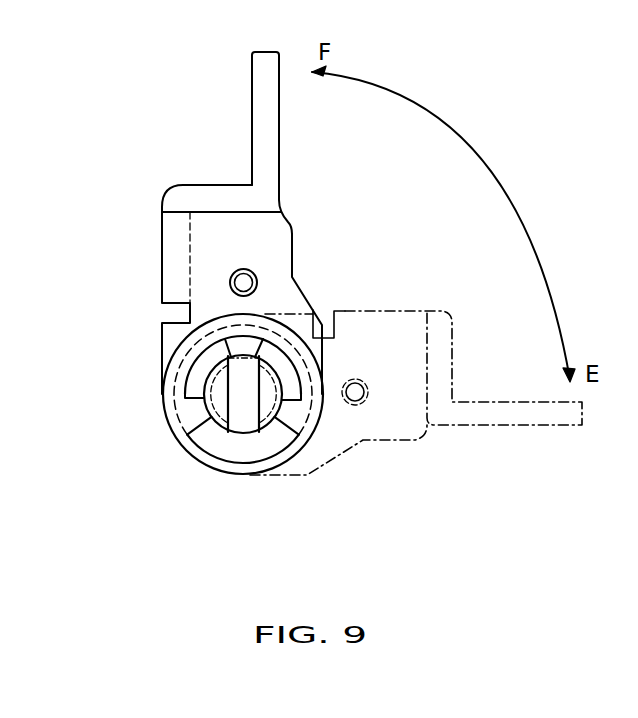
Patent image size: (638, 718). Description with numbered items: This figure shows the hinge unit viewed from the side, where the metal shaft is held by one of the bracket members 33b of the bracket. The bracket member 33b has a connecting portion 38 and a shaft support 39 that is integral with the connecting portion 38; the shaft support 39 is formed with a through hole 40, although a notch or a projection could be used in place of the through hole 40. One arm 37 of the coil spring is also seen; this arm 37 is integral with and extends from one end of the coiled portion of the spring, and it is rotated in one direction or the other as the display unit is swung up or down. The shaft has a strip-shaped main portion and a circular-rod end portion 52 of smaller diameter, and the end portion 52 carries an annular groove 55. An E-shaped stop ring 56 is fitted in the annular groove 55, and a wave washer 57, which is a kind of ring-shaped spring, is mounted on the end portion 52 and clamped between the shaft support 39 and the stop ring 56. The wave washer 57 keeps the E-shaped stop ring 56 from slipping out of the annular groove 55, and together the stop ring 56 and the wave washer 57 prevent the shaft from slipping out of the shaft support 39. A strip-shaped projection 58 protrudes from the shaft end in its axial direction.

The bracket member 33b is at (162, 207).
The arm 37 is at (231, 286).
The connecting portion 38 is at (215, 198).
The shaft support 39 is at (270, 237).
The through hole 40 is at (253, 275).
The end portion 52 is at (268, 381).
The annular groove 55 is at (162, 400).
The E-shaped stop ring 56 is at (180, 347).
The wave washer 57 is at (210, 447).
The strip-shaped projection 58 is at (242, 420).